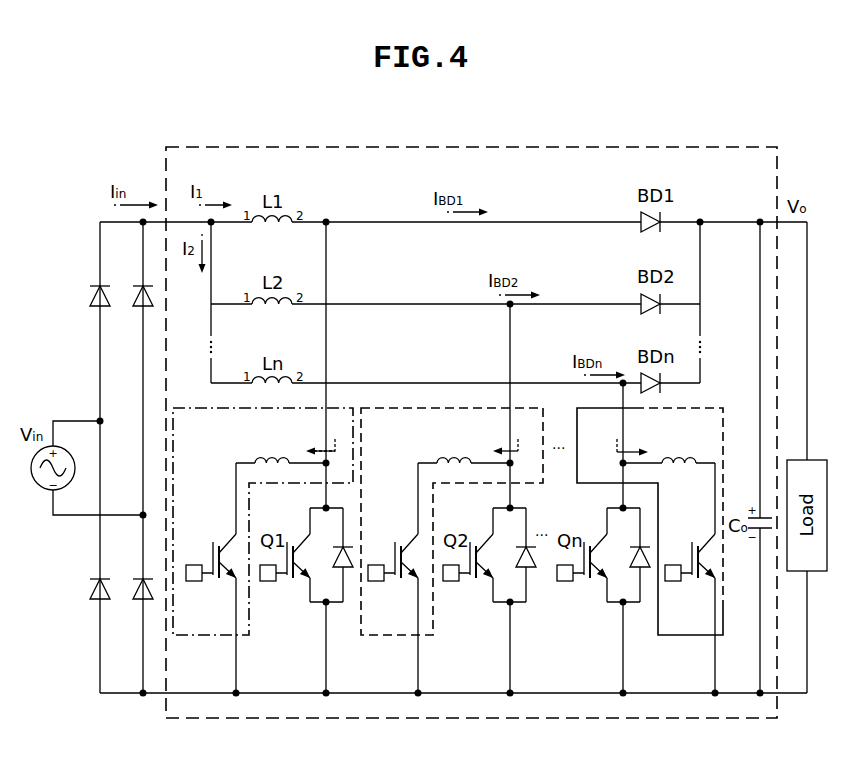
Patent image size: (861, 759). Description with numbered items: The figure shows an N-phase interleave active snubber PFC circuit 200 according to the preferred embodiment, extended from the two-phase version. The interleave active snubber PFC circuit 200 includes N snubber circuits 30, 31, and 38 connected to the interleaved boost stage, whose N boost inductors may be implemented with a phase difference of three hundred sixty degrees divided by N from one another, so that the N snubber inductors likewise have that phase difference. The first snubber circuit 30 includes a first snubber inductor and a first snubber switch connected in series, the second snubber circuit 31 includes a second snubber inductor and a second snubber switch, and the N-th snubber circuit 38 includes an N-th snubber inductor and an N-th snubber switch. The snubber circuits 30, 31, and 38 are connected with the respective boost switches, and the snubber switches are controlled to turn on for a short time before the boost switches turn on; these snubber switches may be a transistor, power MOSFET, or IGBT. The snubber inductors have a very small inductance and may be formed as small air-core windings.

The interleave active snubber PFC circuit 200 is at (505, 146).
The snubber circuit 30 is at (184, 636).
The snubber circuit 31 is at (379, 636).
The snubber circuit 38 is at (665, 636).